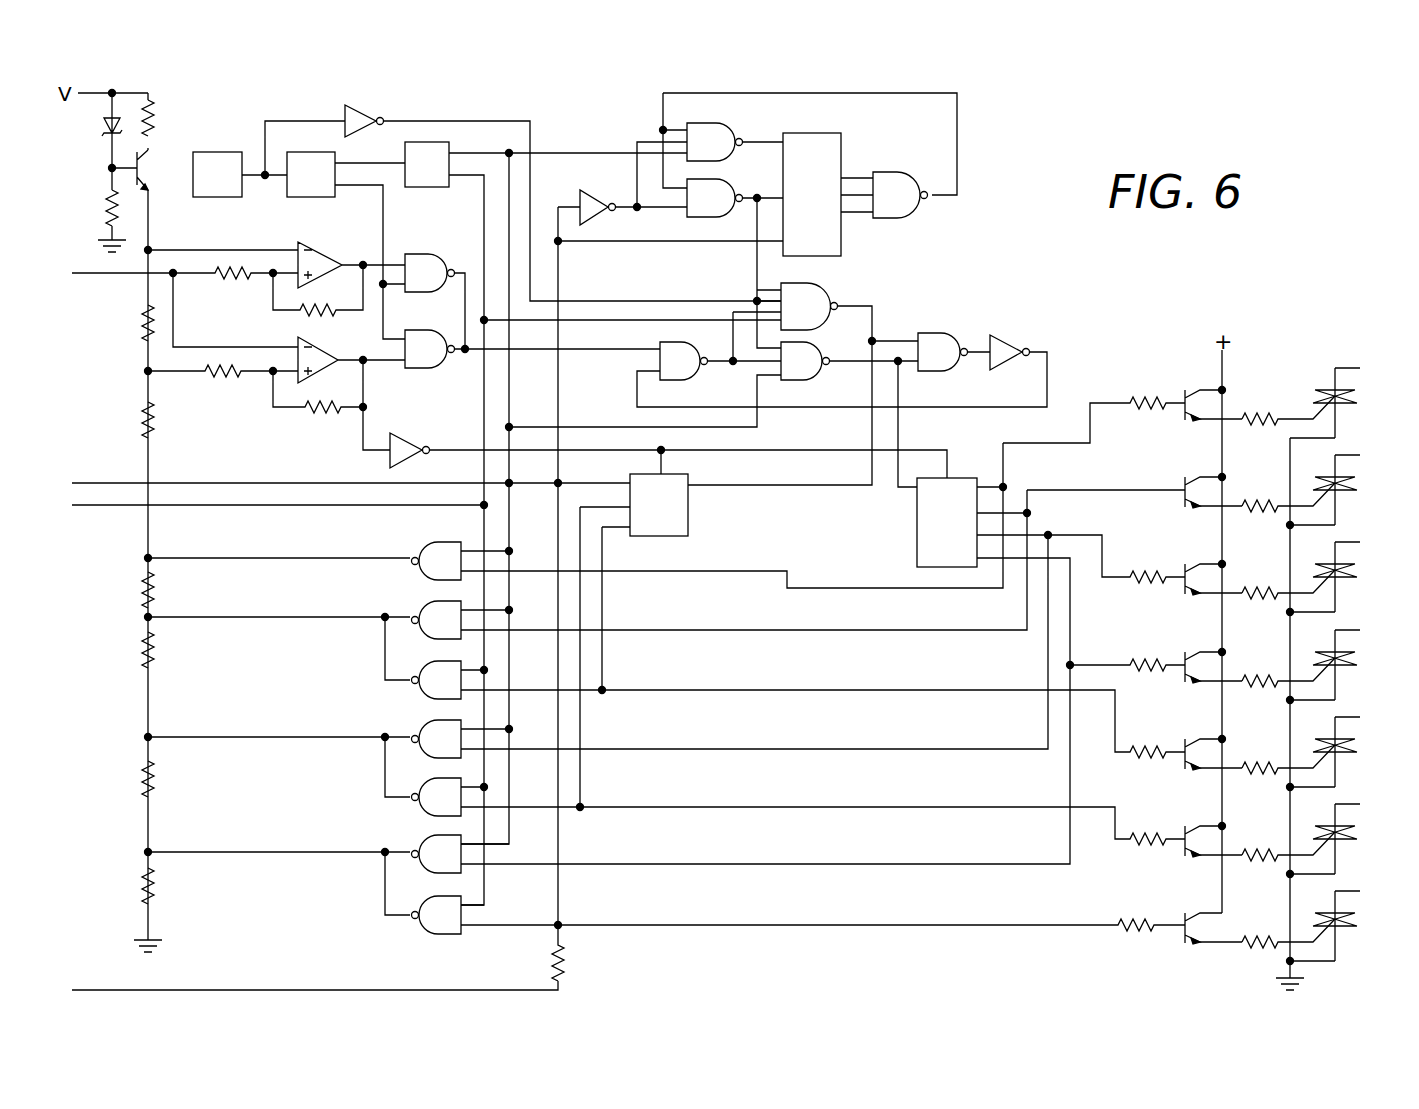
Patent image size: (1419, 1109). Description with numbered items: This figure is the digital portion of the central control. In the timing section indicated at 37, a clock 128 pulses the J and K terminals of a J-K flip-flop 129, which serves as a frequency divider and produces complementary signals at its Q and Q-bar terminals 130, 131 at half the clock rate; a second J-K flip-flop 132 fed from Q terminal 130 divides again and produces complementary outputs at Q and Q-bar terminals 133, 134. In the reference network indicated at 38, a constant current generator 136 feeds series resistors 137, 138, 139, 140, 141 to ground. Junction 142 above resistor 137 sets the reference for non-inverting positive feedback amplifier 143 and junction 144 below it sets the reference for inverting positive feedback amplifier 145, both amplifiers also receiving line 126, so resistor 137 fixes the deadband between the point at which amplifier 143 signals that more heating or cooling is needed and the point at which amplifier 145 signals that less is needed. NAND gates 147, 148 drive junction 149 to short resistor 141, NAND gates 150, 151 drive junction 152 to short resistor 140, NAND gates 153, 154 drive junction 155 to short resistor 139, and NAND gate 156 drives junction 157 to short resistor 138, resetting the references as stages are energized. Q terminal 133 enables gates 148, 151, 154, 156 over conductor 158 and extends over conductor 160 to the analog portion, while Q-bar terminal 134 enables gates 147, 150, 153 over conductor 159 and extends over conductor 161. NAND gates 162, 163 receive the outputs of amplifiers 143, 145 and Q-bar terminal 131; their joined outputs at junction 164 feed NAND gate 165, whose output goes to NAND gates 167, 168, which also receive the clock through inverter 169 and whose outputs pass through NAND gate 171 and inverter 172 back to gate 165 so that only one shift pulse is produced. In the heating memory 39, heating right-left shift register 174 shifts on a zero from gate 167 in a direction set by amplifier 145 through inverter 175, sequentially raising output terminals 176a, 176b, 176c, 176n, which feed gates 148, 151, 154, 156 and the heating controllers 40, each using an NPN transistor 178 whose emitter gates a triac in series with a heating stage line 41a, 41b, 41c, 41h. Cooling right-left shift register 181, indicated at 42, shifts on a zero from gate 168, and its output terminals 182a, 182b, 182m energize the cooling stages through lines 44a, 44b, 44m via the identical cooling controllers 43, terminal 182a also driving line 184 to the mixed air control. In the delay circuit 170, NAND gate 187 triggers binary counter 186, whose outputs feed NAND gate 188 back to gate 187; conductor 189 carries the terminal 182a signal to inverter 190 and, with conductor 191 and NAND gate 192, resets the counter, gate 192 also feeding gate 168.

The timing control circuit 37 is at (227, 136).
The voltage divider network 38 is at (265, 903).
The heating memory 39 is at (906, 498).
The heating controllers 40 is at (1260, 392).
The line to last heating stage 41h is at (1360, 368).
The line to third heating stage 41c is at (1360, 455).
The line to second heating stage 41b is at (1360, 542).
The line to first heating stage 41a is at (1360, 630).
The counter 42 is at (706, 496).
The cooling controllers 43 is at (1235, 965).
The line to last cooling stage 44m is at (1360, 717).
The line to second cooling stage 44b is at (1360, 804).
The line to first cooling stage 44a is at (1360, 891).
The line 126 is at (118, 280).
The clock 128 is at (240, 174).
The J-K flip-flop 129 is at (311, 174).
The Q terminal 130 is at (370, 148).
The Q-bar terminal 131 is at (366, 192).
The J-K flip-flop 132 is at (427, 164).
The Q terminal 133 is at (455, 153).
The Q-bar terminal 134 is at (468, 188).
The constant current generator 136 is at (160, 222).
The resistor 137 is at (136, 330).
The resistor 138 is at (140, 590).
The resistor 139 is at (140, 658).
The resistor 140 is at (140, 778).
The resistor 141 is at (140, 888).
The junction 142 is at (145, 252).
The non-inverting positive feedback amplifier 143 is at (306, 242).
The junction 144 is at (145, 373).
The inverting positive feedback amplifier 145 is at (322, 347).
The NAND gate 147 is at (430, 934).
The NAND gate 148 is at (437, 841).
The junction 149 is at (151, 850).
The NAND gate 150 is at (437, 784).
The NAND gate 151 is at (437, 725).
The junction 152 is at (151, 735).
The NAND gate 153 is at (437, 666).
The NAND gate 154 is at (437, 606).
The junction 155 is at (151, 615).
The NAND gate 156 is at (440, 548).
The junction 157 is at (151, 556).
The conductor 158 is at (509, 412).
The conductor 159 is at (484, 430).
The conductor 160 is at (266, 484).
The conductor 161 is at (266, 506).
The NAND gate 162 is at (416, 256).
The NAND gate 163 is at (443, 322).
The junction 164 is at (466, 358).
The NAND gate 165 is at (668, 342).
The NAND gate 167 is at (806, 380).
The NAND gate 168 is at (826, 290).
The inverter 169 is at (340, 108).
The delay circuit 170 is at (938, 224).
The NAND gate 171 is at (935, 333).
The inverter 172 is at (1012, 337).
The heating right-left shift register 174 is at (947, 522).
The inverter 175 is at (402, 434).
The output terminal 176n is at (1000, 483).
The output terminal 176c is at (1028, 510).
The output terminal 176b is at (1048, 534).
The output terminal 176a is at (1074, 562).
The NPN transistor 178 is at (1183, 660).
The cooling right-left shift register 181 is at (659, 505).
The output terminal 182a is at (592, 483).
The output terminal 182b is at (600, 508).
The output terminal 182m is at (606, 530).
The line 184 is at (166, 990).
The binary counter 186 is at (828, 194).
The NAND gate 187 is at (722, 126).
The NAND gate 188 is at (888, 172).
The conductor 189 is at (560, 400).
The inverter 190 is at (598, 190).
The conductor 191 is at (648, 243).
The NAND gate 192 is at (724, 186).